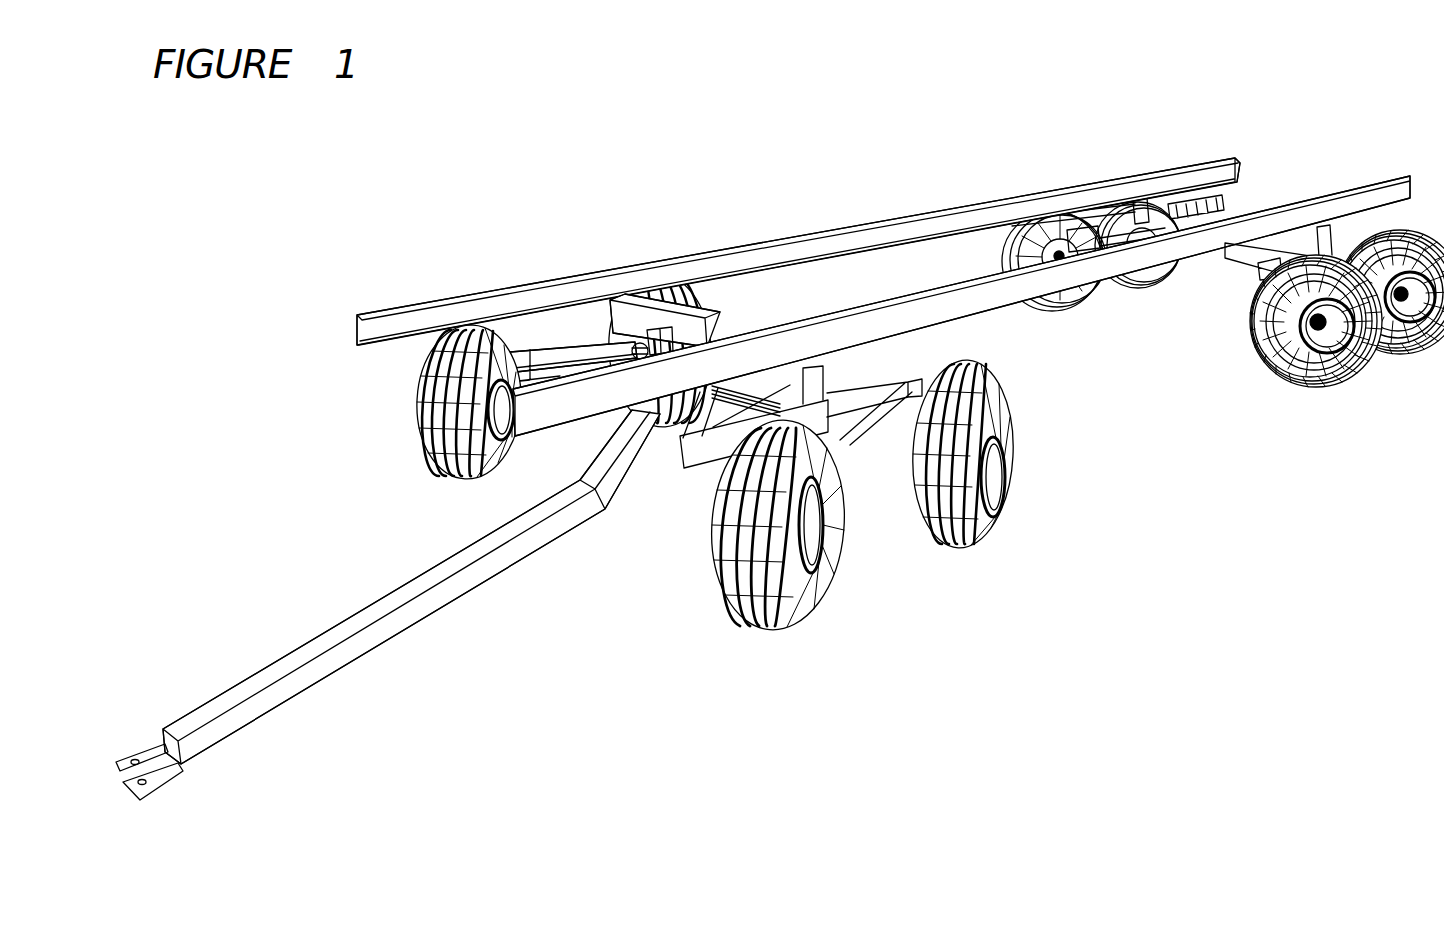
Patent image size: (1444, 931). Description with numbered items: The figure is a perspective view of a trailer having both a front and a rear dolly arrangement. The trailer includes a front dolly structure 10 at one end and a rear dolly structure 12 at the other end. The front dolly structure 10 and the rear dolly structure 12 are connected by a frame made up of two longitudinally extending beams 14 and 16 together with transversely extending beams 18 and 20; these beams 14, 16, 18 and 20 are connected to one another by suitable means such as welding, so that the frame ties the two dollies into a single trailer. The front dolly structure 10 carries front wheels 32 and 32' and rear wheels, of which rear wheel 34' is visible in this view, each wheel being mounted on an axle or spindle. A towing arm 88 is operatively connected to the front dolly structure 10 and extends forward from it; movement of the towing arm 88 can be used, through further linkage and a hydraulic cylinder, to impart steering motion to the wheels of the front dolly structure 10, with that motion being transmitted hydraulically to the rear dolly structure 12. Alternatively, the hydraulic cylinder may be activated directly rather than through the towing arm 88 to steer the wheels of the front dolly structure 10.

The front dolly structure 10 is at (752, 300).
The rear dolly structure 12 is at (1280, 193).
The longitudinally extending beam 14 is at (906, 218).
The longitudinally extending beam 16 is at (1020, 297).
The transversely extending beam 18 is at (632, 315).
The transversely extending beam 20 is at (1190, 199).
The front wheel 32 is at (422, 401).
The front wheel 32' is at (778, 564).
The rear wheel 34' is at (963, 490).
The towing arm 88 is at (405, 618).